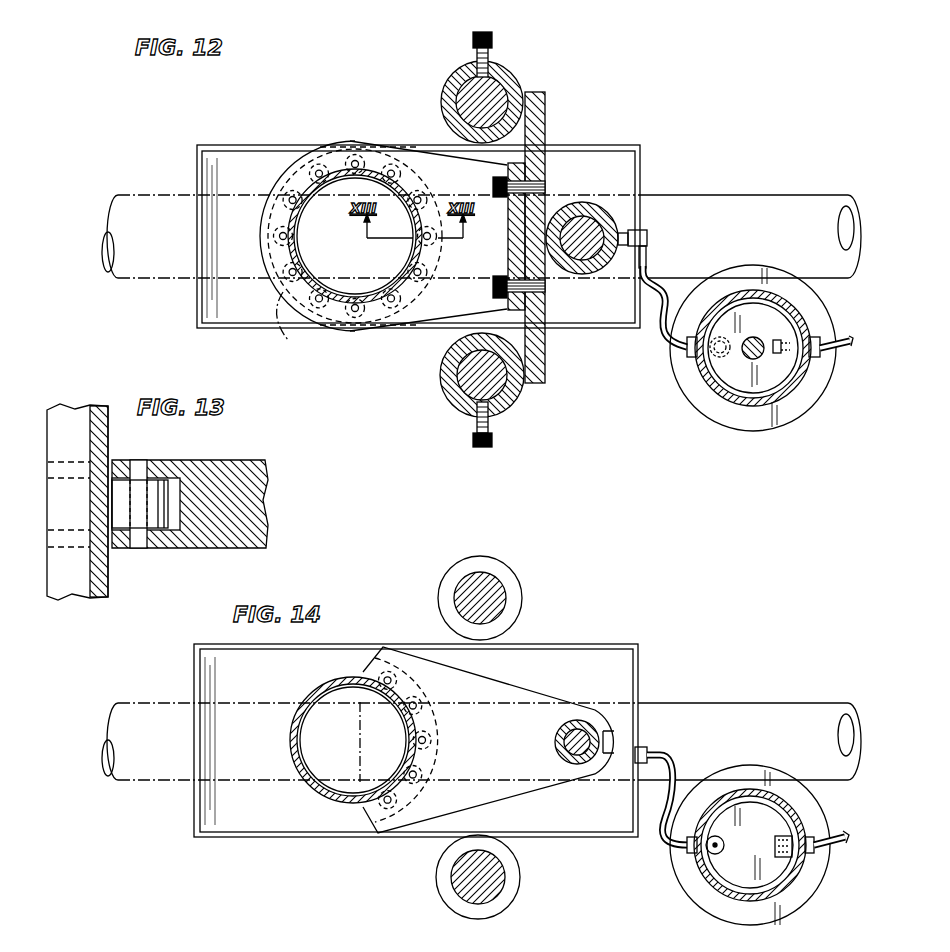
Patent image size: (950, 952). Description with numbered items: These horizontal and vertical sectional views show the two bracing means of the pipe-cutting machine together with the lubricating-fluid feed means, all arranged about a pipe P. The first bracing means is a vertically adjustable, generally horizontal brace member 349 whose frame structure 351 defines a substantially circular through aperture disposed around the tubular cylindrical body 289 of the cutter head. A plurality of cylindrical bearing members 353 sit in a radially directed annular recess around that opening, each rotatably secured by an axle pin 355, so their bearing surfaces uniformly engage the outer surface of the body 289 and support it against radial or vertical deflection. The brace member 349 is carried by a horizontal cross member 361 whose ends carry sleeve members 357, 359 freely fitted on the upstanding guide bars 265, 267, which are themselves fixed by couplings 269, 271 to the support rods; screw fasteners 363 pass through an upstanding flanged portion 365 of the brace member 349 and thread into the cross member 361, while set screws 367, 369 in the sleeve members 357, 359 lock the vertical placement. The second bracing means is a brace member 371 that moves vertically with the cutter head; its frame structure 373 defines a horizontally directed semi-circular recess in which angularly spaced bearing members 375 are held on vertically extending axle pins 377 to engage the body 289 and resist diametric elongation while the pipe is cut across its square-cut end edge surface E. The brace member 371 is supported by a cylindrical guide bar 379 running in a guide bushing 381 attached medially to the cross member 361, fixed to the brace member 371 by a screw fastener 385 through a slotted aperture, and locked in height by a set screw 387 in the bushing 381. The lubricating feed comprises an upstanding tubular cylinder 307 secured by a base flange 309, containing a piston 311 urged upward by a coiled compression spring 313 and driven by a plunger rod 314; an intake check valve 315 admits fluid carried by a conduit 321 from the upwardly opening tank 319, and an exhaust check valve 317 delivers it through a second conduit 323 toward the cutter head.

In FIG. 12, the guide bar 265 is at (462, 395).
In FIG. 14, the guide bar 265 is at (470, 885).
In FIG. 12, the guide bar 267 is at (470, 100).
In FIG. 14, the guide bar 267 is at (462, 590).
In FIG. 14, the coupling 269 is at (505, 910).
In FIG. 14, the coupling 271 is at (523, 598).
In FIG. 12, the cylindrical body 289 is at (313, 275).
In FIG. 13, the cylindrical body 289 is at (72, 598).
In FIG. 14, the cylindrical body 289 is at (332, 692).
In FIG. 12, the tubular cylinder 307 is at (735, 380).
In FIG. 12, the base flange 309 is at (783, 422).
In FIG. 14, the base flange 309 is at (716, 912).
In FIG. 12, the piston 311 is at (748, 394).
In FIG. 14, the coiled compression spring 313 is at (795, 816).
In FIG. 12, the plunger rod 314 is at (760, 343).
In FIG. 12, the intake check valve 315 is at (716, 366).
In FIG. 14, the intake check valve 315 is at (722, 852).
In FIG. 12, the exhaust check valve 317 is at (792, 378).
In FIG. 14, the exhaust check valve 317 is at (790, 826).
In FIG. 12, the tank 319 is at (197, 166).
In FIG. 14, the tank 319 is at (599, 644).
In FIG. 12, the conduit 321 is at (656, 335).
In FIG. 14, the conduit 321 is at (656, 838).
In FIG. 12, the second conduit 323 is at (832, 357).
In FIG. 14, the second conduit 323 is at (845, 850).
In FIG. 12, the brace member 349 is at (322, 142).
In FIG. 12, the frame structure 351 is at (340, 141).
In FIG. 13, the frame structure 351 is at (230, 462).
In FIG. 12, the bearing member 353 is at (290, 342).
In FIG. 13, the bearing member 353 is at (165, 530).
In FIG. 12, the axle pin 355 is at (358, 312).
In FIG. 13, the axle pin 355 is at (140, 548).
In FIG. 12, the sleeve member 357 is at (455, 410).
In FIG. 12, the sleeve member 359 is at (450, 110).
In FIG. 12, the cross member 361 is at (547, 205).
In FIG. 12, the screw fastener 363 is at (493, 285).
In FIG. 12, the flanged portion 365 is at (508, 252).
In FIG. 12, the set screw 367 is at (492, 441).
In FIG. 12, the set screw 369 is at (493, 43).
In FIG. 14, the brace member 371 is at (448, 660).
In FIG. 14, the frame structure 373 is at (425, 815).
In FIG. 14, the bearing member 375 is at (440, 725).
In FIG. 14, the axle pin 377 is at (425, 768).
In FIG. 12, the guide bar 379 is at (605, 236).
In FIG. 14, the guide bar 379 is at (580, 720).
In FIG. 12, the guide bushing 381 is at (600, 222).
In FIG. 14, the screw fastener 385 is at (595, 742).
In FIG. 12, the set screw 387 is at (650, 238).
In FIG. 12, the pipe P is at (724, 197).
In FIG. 14, the pipe P is at (738, 703).
In FIG. 14, the square-cut end edge surface E is at (357, 745).